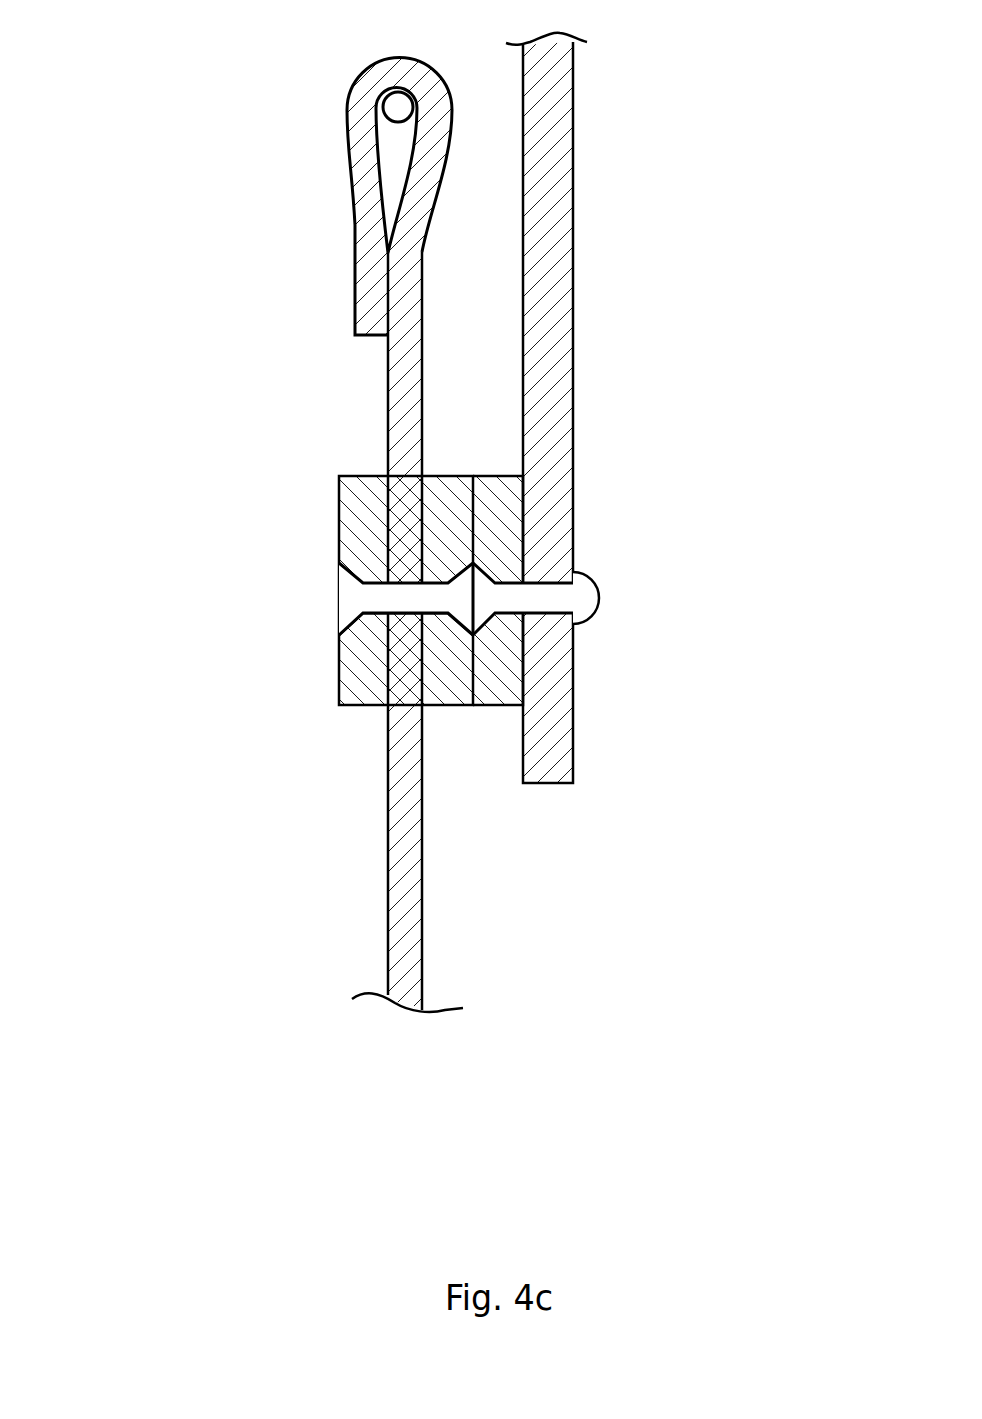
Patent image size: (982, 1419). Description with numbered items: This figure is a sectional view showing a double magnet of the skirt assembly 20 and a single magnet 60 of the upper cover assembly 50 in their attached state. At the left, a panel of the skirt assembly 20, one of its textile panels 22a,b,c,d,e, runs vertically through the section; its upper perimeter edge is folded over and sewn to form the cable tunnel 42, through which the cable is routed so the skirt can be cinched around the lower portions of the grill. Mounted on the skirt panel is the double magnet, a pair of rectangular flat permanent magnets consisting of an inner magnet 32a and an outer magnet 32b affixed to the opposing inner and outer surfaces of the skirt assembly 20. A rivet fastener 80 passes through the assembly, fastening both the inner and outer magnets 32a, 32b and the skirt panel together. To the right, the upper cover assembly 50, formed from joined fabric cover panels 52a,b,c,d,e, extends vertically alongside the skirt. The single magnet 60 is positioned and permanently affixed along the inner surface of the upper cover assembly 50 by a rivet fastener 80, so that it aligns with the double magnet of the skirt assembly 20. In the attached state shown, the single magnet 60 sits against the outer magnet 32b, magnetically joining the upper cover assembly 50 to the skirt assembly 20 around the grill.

The skirt assembly 20 is at (348, 437).
The skirt panels 22a,b,c,d,e is at (423, 870).
The inner magnet 32a is at (339, 698).
The outer magnet 32b is at (450, 642).
The cable tunnel 42 is at (395, 147).
The upper cover assembly 50 is at (563, 328).
The cover panels 52a,b,c,d,e is at (573, 177).
The single magnet 60 is at (498, 532).
The rivet fastener 80 is at (352, 596).